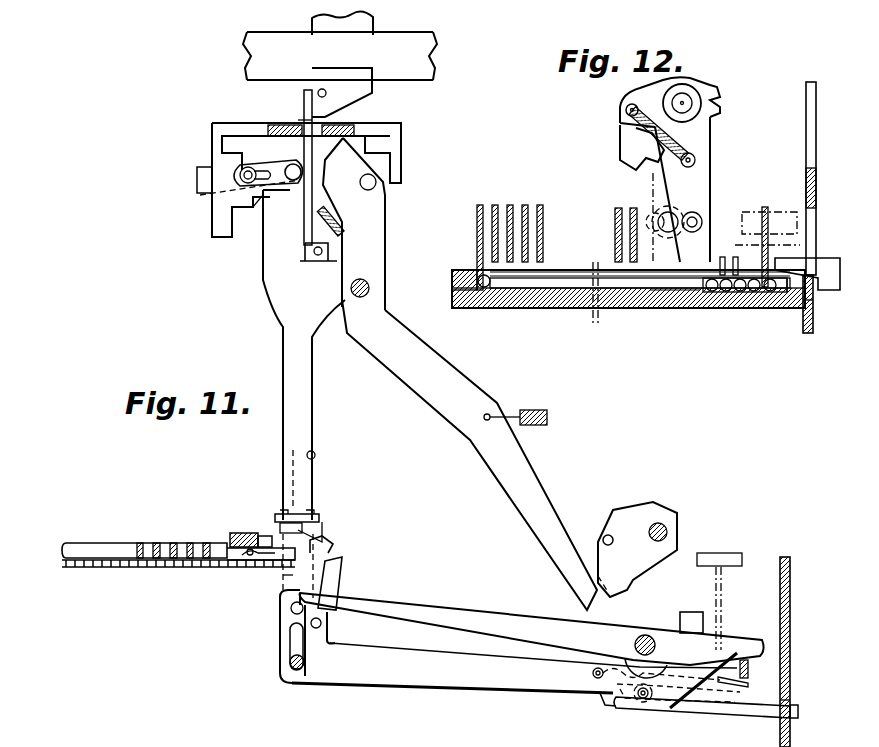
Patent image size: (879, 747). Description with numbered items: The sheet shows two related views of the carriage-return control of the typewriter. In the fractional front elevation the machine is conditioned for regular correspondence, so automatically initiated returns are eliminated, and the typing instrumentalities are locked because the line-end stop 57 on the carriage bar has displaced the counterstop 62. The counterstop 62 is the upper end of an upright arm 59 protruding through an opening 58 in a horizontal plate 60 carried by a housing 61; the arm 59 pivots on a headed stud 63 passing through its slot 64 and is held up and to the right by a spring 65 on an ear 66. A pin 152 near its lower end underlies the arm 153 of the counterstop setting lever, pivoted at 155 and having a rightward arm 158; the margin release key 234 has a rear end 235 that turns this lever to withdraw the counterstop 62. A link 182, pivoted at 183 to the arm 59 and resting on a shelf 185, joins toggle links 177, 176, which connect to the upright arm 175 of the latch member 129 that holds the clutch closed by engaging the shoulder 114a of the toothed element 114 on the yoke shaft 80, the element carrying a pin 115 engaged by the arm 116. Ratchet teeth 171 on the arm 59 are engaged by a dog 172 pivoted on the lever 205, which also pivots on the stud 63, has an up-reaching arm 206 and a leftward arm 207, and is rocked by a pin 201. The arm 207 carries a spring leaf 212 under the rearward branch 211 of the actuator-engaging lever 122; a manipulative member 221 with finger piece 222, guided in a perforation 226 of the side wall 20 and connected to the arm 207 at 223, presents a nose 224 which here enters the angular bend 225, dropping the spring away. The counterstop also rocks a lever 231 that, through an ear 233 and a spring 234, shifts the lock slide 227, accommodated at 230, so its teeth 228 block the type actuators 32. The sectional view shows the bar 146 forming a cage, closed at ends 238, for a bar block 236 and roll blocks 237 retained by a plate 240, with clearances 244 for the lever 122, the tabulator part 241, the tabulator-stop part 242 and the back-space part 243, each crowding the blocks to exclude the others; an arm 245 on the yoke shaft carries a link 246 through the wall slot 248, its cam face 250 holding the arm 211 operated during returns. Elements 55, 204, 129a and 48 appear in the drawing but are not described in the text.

In FIG. 11, the bar 55 is at (247, 58).
In FIG. 11, the line-end stop 57 is at (374, 38).
In FIG. 11, the block 204 is at (334, 108).
In FIG. 11, the counterstop 62 is at (304, 100).
In FIG. 11, the opening 58 is at (300, 123).
In FIG. 11, the horizontal plate 60 is at (391, 125).
In FIG. 11, the housing 61 is at (207, 220).
In FIG. 11, the shelf 185 is at (214, 238).
In FIG. 11, the link 182 is at (258, 207).
In FIG. 11, the toggle link 177 is at (284, 165).
In FIG. 11, the pivotal connection 183 is at (293, 181).
In FIG. 11, the toggle link 176 is at (370, 191).
In FIG. 11, the upright arm 175 is at (382, 224).
In FIG. 11, the spring 65 is at (344, 239).
In FIG. 11, the ear 66 is at (316, 263).
In FIG. 11, the upright arm 59 is at (283, 380).
In FIG. 11, the pin 201 is at (315, 456).
In FIG. 11, the lever 231 is at (320, 519).
In FIG. 11, the ear 233 is at (268, 534).
In FIG. 11, the margin release key 234 is at (244, 533).
In FIG. 11, the lock slide 227 is at (100, 543).
In FIG. 11, the type actuator 32 is at (178, 543).
In FIG. 11, the teeth 228 is at (125, 568).
In FIG. 11, the slide accommodation 230 is at (246, 559).
In FIG. 11, the up-reaching arm 206 is at (284, 578).
In FIG. 11, the ratchet teeth 171 is at (335, 542).
In FIG. 11, the dog 172 is at (343, 576).
In FIG. 11, the pin 152 is at (290, 612).
In FIG. 11, the slot 64 is at (302, 646).
In FIG. 11, the headed stud 63 is at (290, 667).
In FIG. 11, the arm 153 is at (433, 609).
In FIG. 11, the pivot 155 is at (636, 644).
In FIG. 11, the rightwardly extending arm 158 is at (714, 636).
In FIG. 11, the lever 205 is at (402, 646).
In FIG. 11, the lever arm 207 is at (438, 682).
In FIG. 11, the latch member 129 is at (525, 457).
In FIG. 11, the spring 129a is at (545, 410).
In FIG. 11, the toothed element 114 is at (611, 517).
In FIG. 12, the toothed element 114 is at (728, 101).
In FIG. 11, the pin 115 is at (603, 540).
In FIG. 12, the pin 115 is at (626, 108).
In FIG. 11, the yoke shaft 80 is at (667, 531).
In FIG. 12, the yoke shaft 80 is at (699, 116).
In FIG. 11, the shoulder 114a is at (628, 592).
In FIG. 12, the shoulder 114a is at (642, 147).
In FIG. 11, the right hand side wall 20 is at (790, 626).
In FIG. 12, the right hand side wall 20 is at (816, 113).
In FIG. 11, the rearward branch 211 is at (748, 669).
In FIG. 12, the rearward branch 211 is at (766, 215).
In FIG. 11, the spring leaf 212 is at (748, 685).
In FIG. 11, the rear end 235 is at (722, 660).
In FIG. 11, the perforation 226 is at (790, 700).
In FIG. 11, the manipulative member 221 is at (736, 714).
In FIG. 11, the finger piece 222 is at (798, 711).
In FIG. 11, the angular bend 225 is at (593, 673).
In FIG. 11, the nose 224 is at (612, 692).
In FIG. 11, the pin-and-slot connection 223 is at (648, 702).
In FIG. 12, the cage end 238 is at (455, 300).
In FIG. 12, the plate 240 is at (572, 270).
In FIG. 12, the block 236 is at (625, 308).
In FIG. 12, the bar 146 is at (683, 308).
In FIG. 12, the operating clearances 244 is at (740, 293).
In FIG. 12, the blocks 237 is at (786, 300).
In FIG. 12, the cam face 250 is at (813, 300).
In FIG. 12, the link 246 is at (842, 262).
In FIG. 12, the slot 248 is at (822, 213).
In FIG. 12, the arm 245 is at (696, 164).
In FIG. 12, the arm 116 is at (630, 123).
In FIG. 12, the back-space-key operated part 243 is at (477, 223).
In FIG. 12, the actuator engaging lever 122 is at (628, 207).
In FIG. 12, the tabulator-stop-setting part 242 is at (722, 257).
In FIG. 12, the carriage 48 is at (745, 215).
In FIG. 12, the tabulator-key-operated part 241 is at (740, 228).